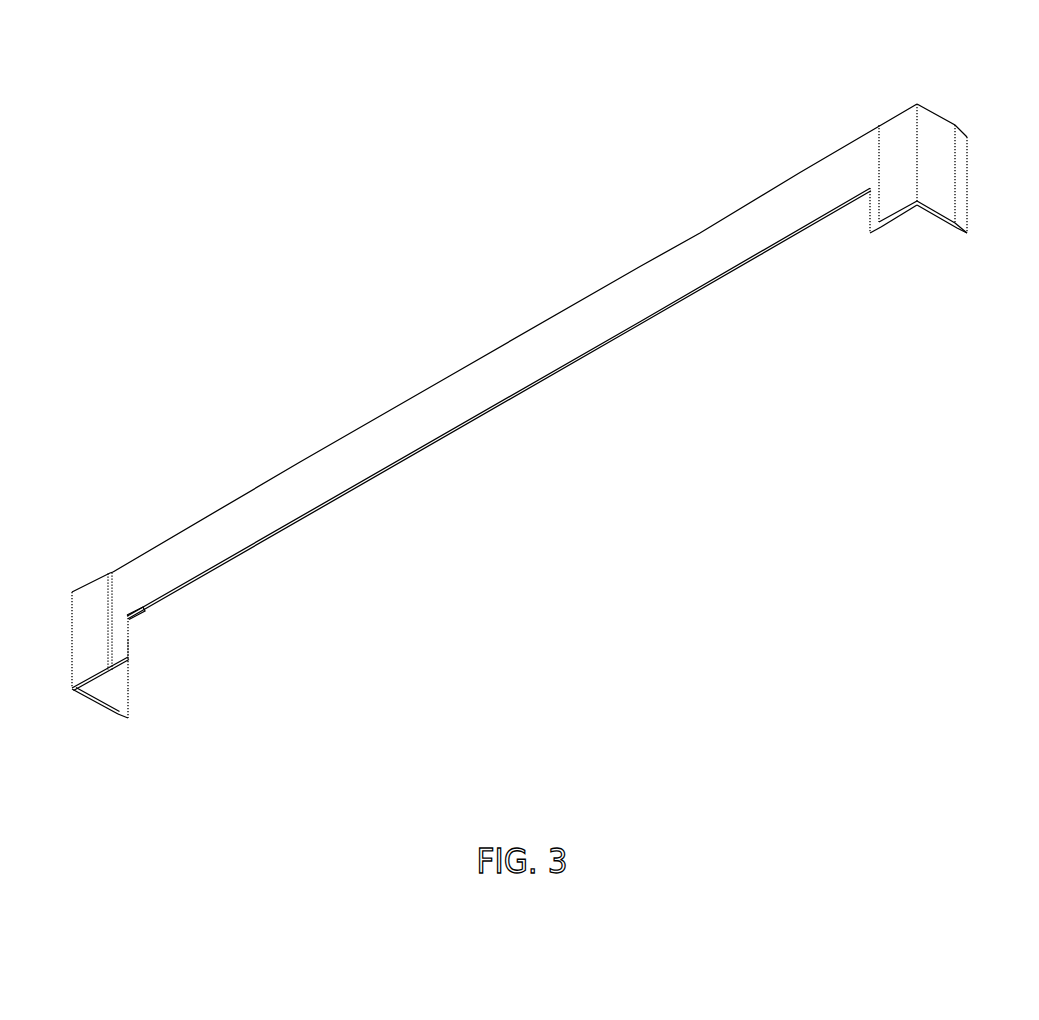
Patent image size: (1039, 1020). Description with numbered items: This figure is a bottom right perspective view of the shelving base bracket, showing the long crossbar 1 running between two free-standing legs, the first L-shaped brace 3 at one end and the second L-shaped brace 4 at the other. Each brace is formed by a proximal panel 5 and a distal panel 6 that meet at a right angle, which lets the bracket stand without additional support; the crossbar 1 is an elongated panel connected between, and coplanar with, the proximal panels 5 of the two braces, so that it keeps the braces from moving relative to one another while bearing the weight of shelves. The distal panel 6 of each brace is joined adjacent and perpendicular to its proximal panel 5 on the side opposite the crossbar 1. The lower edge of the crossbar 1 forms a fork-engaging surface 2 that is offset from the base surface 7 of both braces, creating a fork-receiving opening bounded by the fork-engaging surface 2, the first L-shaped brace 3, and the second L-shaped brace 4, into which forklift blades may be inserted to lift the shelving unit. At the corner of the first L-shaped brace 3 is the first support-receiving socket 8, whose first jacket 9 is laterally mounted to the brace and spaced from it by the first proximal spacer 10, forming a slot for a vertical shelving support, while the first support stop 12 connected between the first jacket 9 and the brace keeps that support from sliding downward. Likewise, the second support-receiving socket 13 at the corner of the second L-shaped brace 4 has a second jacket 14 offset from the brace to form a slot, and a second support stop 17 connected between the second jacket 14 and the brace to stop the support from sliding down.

The crossbar 1 is at (520, 342).
The fork-engaging surface 2 is at (396, 463).
The first L-shaped brace 3 is at (127, 629).
The second L-shaped brace 4 is at (967, 218).
The proximal panel 5 is at (128, 654).
The distal panel 6 is at (128, 707).
The base surface 7 is at (118, 712).
The first support-receiving socket 8 is at (71, 612).
The first jacket 9 is at (71, 655).
The first proximal spacer 10 is at (112, 571).
The first support stop 12 is at (90, 702).
The second support-receiving socket 13 is at (968, 175).
The second jacket 14 is at (935, 125).
The second support stop 17 is at (896, 222).